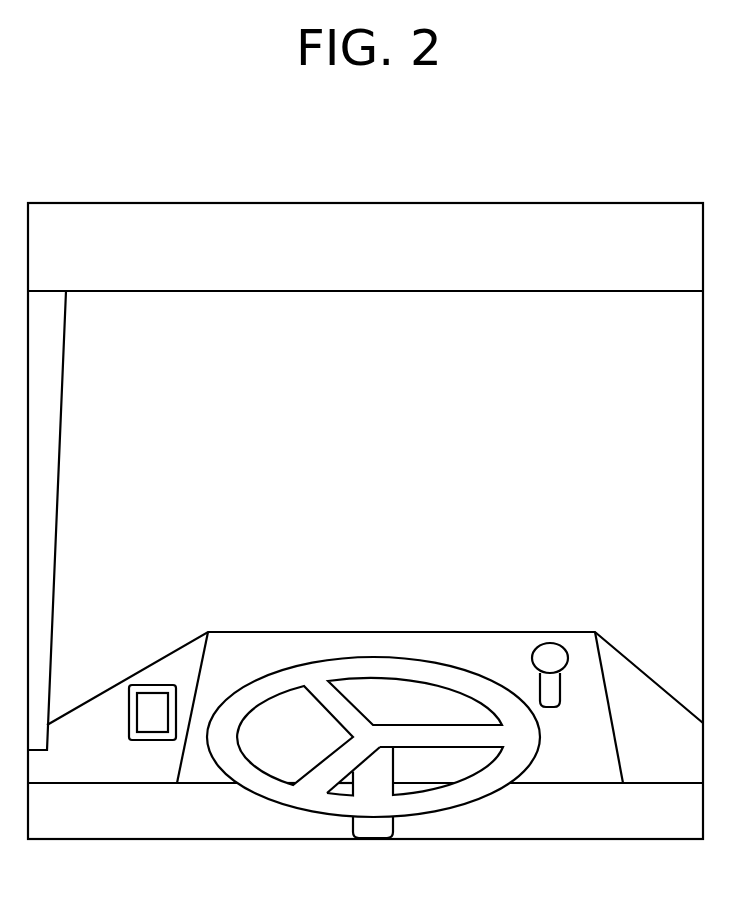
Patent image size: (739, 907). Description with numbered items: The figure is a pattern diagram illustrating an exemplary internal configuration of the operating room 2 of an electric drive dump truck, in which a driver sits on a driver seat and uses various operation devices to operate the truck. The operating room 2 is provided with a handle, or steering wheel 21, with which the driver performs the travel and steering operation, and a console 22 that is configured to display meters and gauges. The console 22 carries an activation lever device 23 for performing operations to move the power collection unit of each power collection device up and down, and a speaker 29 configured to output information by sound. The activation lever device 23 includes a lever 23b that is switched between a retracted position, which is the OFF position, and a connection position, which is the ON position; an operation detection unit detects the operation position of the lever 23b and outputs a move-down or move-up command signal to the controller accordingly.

The operating room 2 is at (598, 190).
The handle (steering wheel) 21 is at (374, 657).
The console 22 is at (590, 712).
The activation lever device 23 is at (543, 612).
The lever 23b is at (548, 657).
The speaker 29 is at (152, 705).